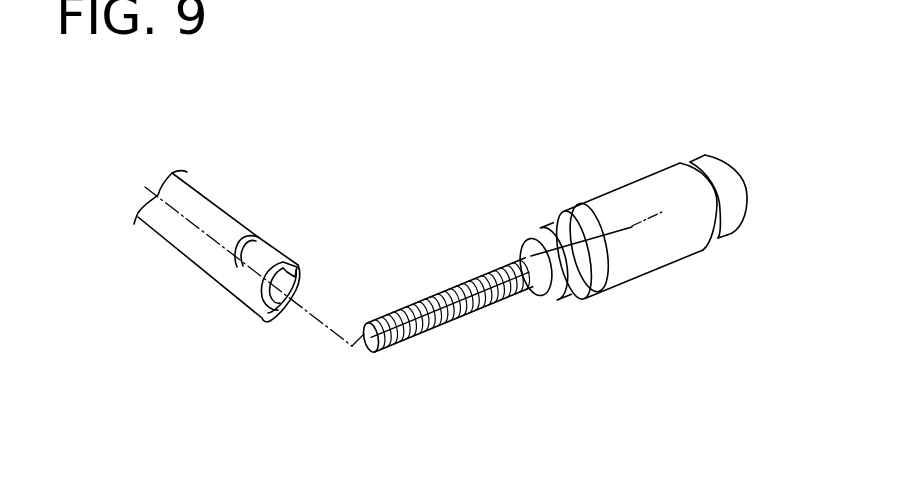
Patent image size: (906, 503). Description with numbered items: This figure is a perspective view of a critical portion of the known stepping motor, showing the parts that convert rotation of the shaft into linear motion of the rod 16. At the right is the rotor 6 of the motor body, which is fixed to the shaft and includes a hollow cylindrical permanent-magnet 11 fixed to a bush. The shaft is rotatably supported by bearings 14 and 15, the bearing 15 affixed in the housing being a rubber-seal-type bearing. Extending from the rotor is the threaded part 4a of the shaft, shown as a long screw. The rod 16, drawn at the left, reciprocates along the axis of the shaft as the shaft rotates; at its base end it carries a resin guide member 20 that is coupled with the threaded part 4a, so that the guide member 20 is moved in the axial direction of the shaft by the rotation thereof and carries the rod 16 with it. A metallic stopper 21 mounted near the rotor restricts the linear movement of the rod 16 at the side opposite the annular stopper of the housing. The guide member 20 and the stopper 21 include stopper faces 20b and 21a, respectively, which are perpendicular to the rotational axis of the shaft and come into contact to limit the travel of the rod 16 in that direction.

The threaded part 4a is at (500, 298).
The rotor 6 is at (658, 247).
The hollow cylindrical permanent-magnet 11 is at (647, 277).
The bearing 14 is at (728, 238).
The bearing 15 is at (588, 293).
The rod 16 is at (201, 196).
The guide member 20 is at (255, 236).
The stopper face 20b is at (293, 308).
The stopper 21 is at (549, 292).
The stopper face 21a is at (556, 236).